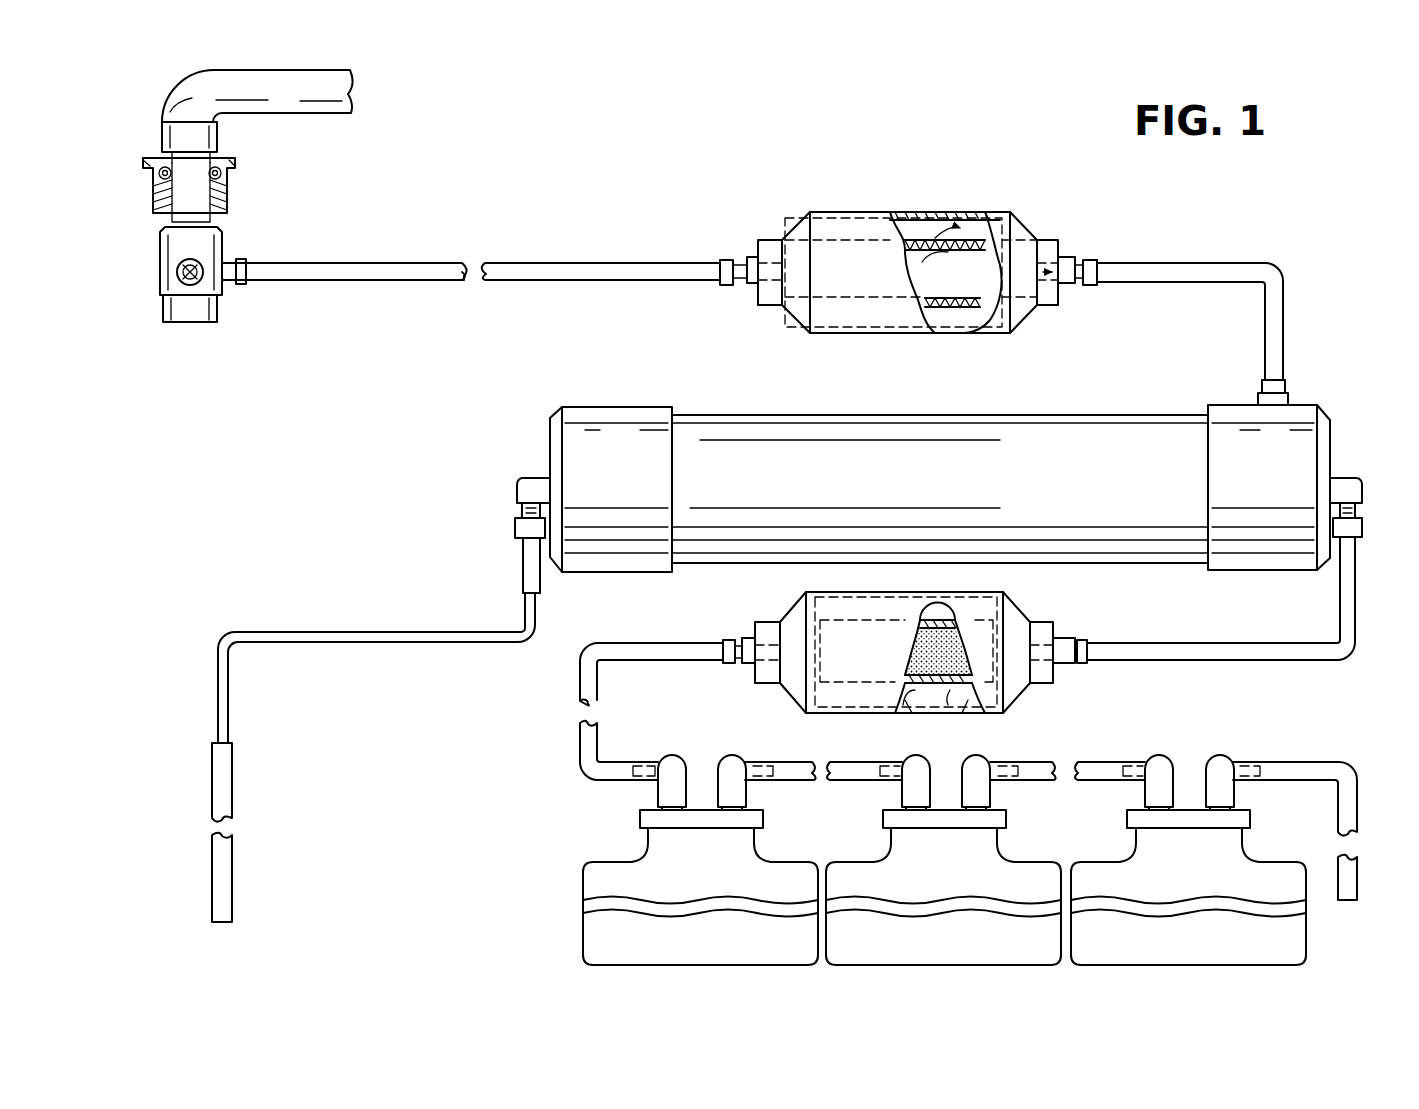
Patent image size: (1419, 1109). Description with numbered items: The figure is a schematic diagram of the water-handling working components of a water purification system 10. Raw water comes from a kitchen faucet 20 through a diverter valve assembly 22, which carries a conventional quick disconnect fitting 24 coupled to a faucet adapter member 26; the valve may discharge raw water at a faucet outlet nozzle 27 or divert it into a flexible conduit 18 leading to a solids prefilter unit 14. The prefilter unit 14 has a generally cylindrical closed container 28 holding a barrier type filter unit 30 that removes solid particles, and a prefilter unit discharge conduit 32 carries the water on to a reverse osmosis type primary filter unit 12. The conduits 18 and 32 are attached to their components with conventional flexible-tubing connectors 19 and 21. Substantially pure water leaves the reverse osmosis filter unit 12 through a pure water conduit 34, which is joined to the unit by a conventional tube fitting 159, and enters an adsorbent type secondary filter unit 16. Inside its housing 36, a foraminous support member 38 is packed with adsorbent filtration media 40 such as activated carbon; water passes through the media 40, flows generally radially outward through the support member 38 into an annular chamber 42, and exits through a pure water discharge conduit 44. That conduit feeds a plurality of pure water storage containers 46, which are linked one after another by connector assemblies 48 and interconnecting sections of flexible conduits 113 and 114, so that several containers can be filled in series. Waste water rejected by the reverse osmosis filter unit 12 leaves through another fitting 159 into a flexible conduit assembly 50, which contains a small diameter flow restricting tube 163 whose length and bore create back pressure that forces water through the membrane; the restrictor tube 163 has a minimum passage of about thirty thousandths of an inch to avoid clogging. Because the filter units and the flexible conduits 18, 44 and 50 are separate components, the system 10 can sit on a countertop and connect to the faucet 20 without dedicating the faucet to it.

The water purification system 10 is at (1226, 234).
The reverse osmosis type primary filter unit 12 is at (982, 410).
The solids prefilter unit 14 is at (843, 204).
The adsorbent type secondary filter unit 16 is at (996, 592).
The flexible conduit 18 is at (527, 262).
The connector 19 is at (243, 285).
The kitchen faucet 20 is at (322, 114).
The connectors 21 is at (748, 258).
The diverter valve assembly 22 is at (156, 262).
The quick disconnect fitting 24 is at (228, 183).
The faucet adapter member 26 is at (218, 134).
The faucet outlet nozzle 27 is at (188, 323).
The closed container 28 is at (938, 212).
The barrier type filter unit 30 is at (950, 310).
The prefilter unit discharge conduit 32 is at (1284, 290).
The pure water conduit 34 is at (1188, 643).
The housing 36 is at (970, 712).
The foraminous support member 38 is at (945, 690).
The adsorbent type filtration media 40 is at (910, 645).
The annular chamber 42 is at (915, 690).
The pure water discharge conduit 44 is at (598, 690).
The pure water storage containers 46 is at (621, 862).
The connector assemblies 48 is at (711, 834).
The flexible conduit assembly 50 is at (340, 629).
The flexible conduit 113 is at (780, 762).
The flexible conduit 114 is at (1310, 762).
The tube fitting 159 is at (527, 478).
The flow restricting tube 163 is at (417, 643).